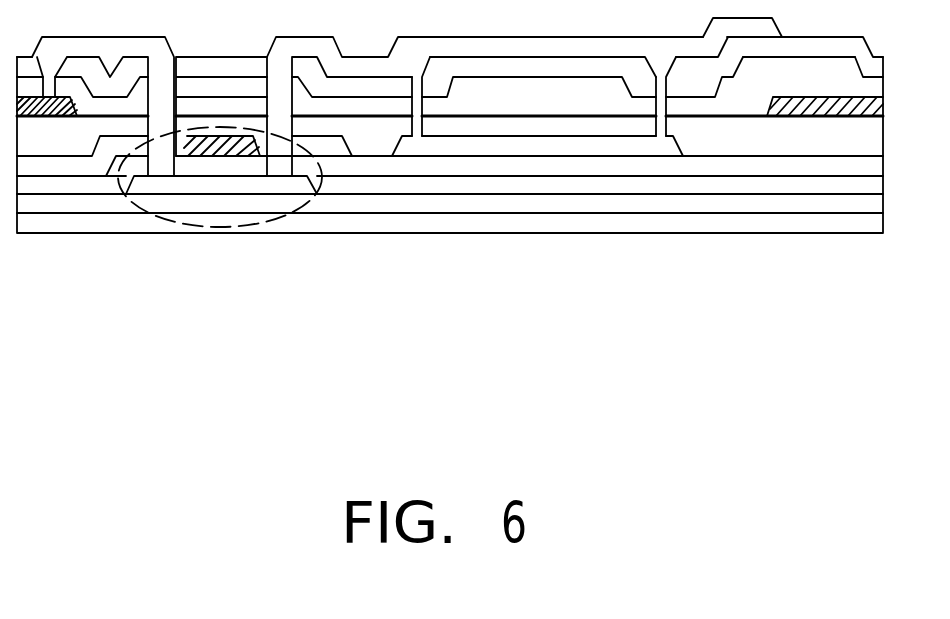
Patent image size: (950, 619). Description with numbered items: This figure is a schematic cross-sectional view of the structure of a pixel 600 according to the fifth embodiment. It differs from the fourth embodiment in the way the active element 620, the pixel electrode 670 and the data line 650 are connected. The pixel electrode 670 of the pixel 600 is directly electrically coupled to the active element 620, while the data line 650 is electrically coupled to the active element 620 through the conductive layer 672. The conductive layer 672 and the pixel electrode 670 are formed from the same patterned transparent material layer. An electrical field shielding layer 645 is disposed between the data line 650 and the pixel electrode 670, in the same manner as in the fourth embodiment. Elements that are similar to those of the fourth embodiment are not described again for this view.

The pixel 600 is at (847, 368).
The active element 620 is at (281, 228).
The electrical field shielding layer 645 is at (777, 63).
The data line 650 is at (824, 110).
The pixel electrode 670 is at (487, 43).
The conductive layer 672 is at (110, 55).